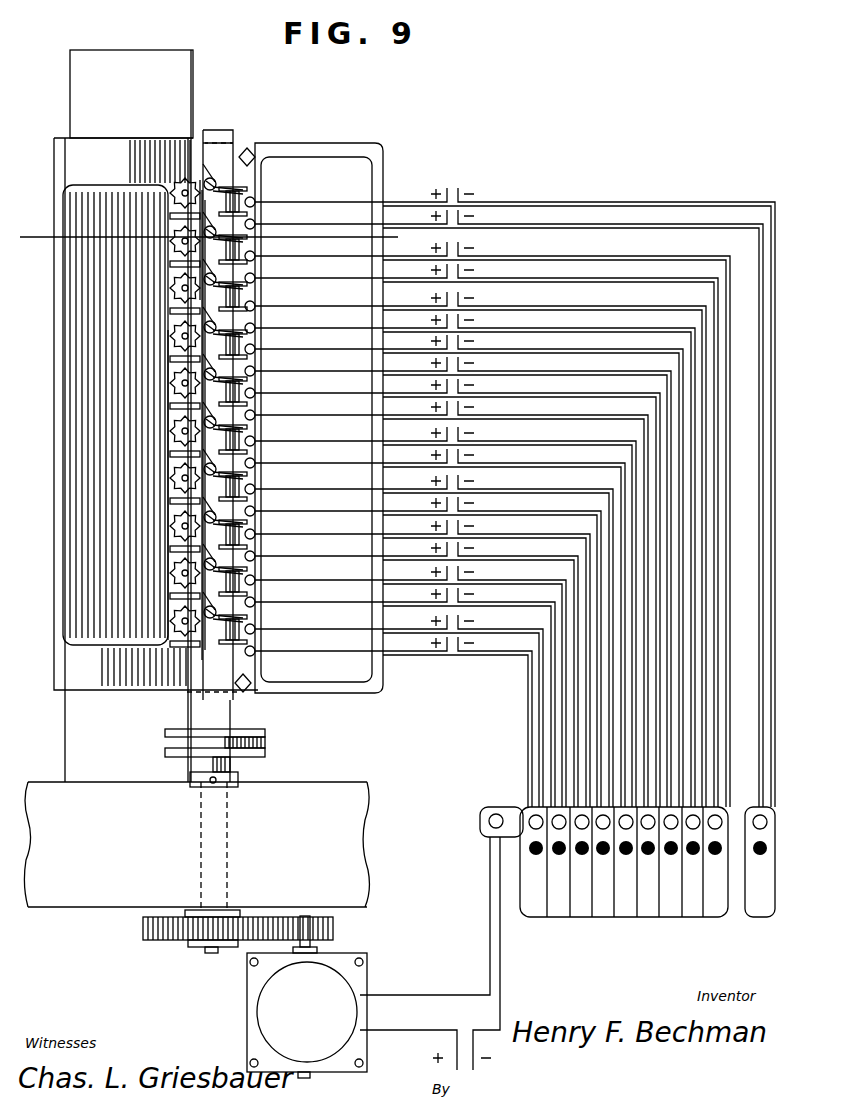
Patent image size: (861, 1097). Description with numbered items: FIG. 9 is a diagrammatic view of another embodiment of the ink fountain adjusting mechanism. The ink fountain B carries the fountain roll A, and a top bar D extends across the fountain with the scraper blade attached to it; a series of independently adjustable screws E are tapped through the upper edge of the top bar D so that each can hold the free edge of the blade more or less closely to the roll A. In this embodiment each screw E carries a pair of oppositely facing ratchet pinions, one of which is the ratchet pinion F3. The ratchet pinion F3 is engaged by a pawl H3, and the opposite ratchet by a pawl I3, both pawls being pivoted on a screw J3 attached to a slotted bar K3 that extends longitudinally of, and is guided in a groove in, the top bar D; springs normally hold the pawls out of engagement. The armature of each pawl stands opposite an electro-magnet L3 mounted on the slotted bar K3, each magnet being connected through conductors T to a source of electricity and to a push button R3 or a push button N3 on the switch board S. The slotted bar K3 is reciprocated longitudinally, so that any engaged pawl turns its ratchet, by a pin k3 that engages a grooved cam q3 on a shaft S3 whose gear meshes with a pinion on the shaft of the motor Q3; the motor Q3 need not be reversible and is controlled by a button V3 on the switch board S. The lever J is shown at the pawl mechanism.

The fountain roll A is at (115, 415).
The ink fountain B is at (384, 686).
The top bar D is at (262, 165).
The screws E is at (170, 400).
The ratchet pinion F3 is at (172, 482).
The pawl H3 is at (170, 550).
The pawl I3 is at (175, 430).
The screw J3 is at (200, 610).
The lever J is at (190, 278).
The electro-magnet L3 is at (258, 212).
The wiring T is at (592, 203).
The switch board S is at (648, 917).
The push button R3 is at (582, 815).
The push button N3 is at (582, 850).
The button V3 is at (488, 821).
The slotted bar K3 is at (222, 712).
The pin k3 is at (185, 735).
The grooved cam q3 is at (165, 752).
The shaft S3 is at (235, 766).
The motor Q3 is at (275, 1027).